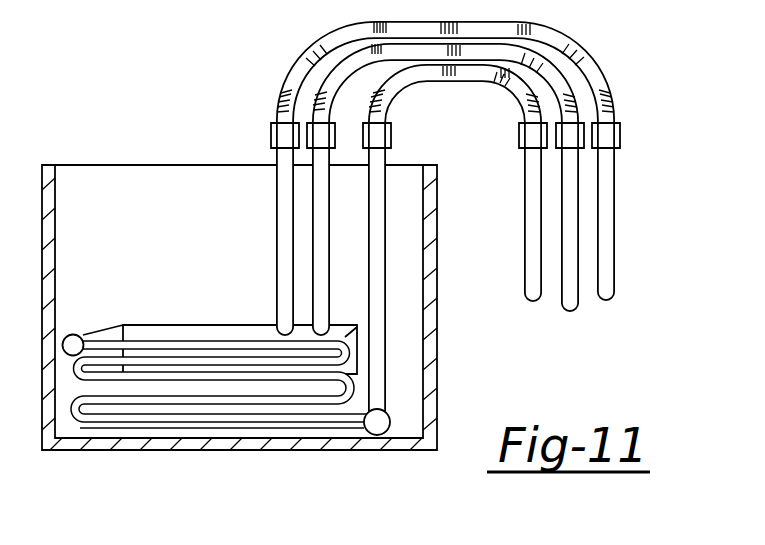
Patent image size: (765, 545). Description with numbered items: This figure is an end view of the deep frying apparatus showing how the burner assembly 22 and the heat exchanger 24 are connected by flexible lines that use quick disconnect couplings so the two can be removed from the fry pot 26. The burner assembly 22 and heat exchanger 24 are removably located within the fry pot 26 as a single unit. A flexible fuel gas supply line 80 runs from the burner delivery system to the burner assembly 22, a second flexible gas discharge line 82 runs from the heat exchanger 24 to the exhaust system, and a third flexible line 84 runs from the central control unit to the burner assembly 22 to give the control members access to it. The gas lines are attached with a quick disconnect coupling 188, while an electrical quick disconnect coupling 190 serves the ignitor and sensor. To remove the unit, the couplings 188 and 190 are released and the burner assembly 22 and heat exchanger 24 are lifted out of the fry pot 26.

The burner assembly 22 is at (356, 327).
The heat exchanger 24 is at (105, 382).
The fry pot 26 is at (433, 384).
The flexible fuel gas supply line 80 is at (524, 58).
The flexible gas discharge line 82 is at (463, 83).
The flexible line 84 is at (370, 25).
The quick disconnect coupling 188 is at (310, 133).
The electrical quick disconnect coupling 190 is at (270, 136).